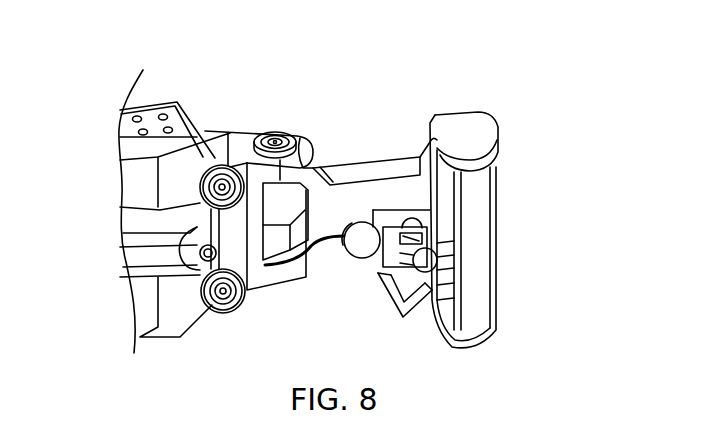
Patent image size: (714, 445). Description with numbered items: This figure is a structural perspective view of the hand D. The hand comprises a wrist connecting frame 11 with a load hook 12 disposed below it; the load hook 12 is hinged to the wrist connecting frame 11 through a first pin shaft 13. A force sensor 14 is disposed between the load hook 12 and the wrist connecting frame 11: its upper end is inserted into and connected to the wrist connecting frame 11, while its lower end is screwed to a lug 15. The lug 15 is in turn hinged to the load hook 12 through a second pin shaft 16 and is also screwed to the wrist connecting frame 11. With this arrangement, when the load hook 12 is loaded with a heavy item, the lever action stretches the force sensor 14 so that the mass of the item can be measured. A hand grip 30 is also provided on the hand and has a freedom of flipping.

The wrist connecting frame 11 is at (350, 200).
The load hook 12 is at (381, 260).
The first pin shaft 13 is at (358, 243).
The force sensor 14 is at (418, 215).
The lug 15 is at (433, 230).
The second pin shaft 16 is at (425, 260).
The hand grip 30 is at (478, 190).